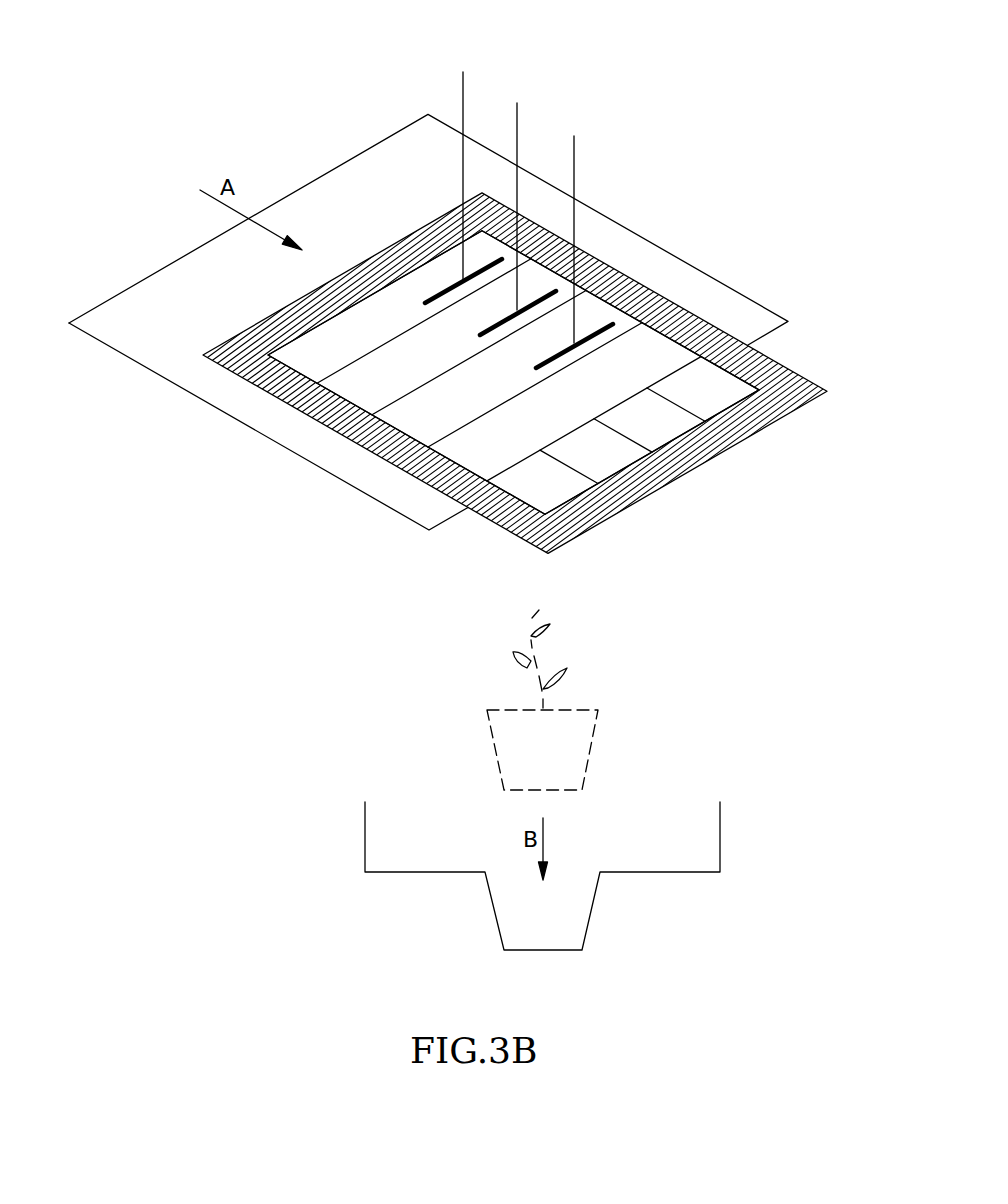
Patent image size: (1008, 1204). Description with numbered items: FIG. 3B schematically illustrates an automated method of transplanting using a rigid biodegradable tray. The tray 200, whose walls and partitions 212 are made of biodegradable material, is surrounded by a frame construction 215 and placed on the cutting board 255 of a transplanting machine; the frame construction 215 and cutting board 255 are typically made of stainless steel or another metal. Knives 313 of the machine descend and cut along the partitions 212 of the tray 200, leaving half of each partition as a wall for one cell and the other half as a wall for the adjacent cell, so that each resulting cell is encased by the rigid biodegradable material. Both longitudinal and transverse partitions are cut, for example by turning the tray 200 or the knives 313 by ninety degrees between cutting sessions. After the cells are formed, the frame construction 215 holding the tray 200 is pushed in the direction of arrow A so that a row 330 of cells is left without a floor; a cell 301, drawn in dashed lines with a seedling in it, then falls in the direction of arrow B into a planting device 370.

The tray 200 is at (643, 353).
The partitions 212 is at (452, 425).
The frame construction 215 is at (690, 452).
The cutting board 255 is at (220, 390).
The plant pot 301 is at (567, 750).
The knives 313 is at (463, 95).
The row 330 is at (708, 392).
The planting device 370 is at (687, 843).